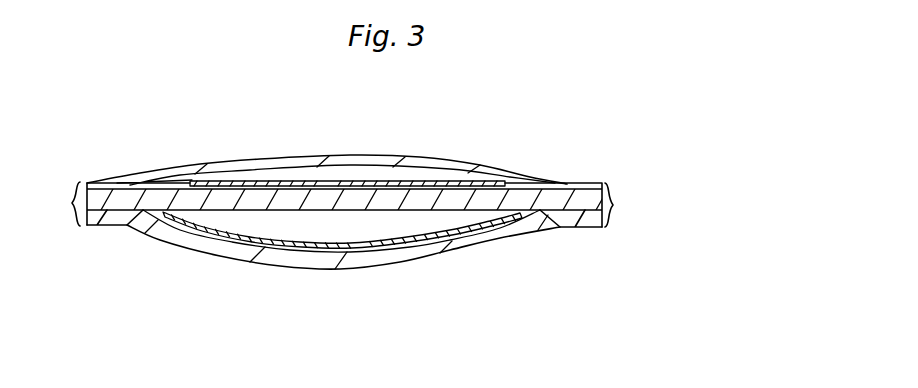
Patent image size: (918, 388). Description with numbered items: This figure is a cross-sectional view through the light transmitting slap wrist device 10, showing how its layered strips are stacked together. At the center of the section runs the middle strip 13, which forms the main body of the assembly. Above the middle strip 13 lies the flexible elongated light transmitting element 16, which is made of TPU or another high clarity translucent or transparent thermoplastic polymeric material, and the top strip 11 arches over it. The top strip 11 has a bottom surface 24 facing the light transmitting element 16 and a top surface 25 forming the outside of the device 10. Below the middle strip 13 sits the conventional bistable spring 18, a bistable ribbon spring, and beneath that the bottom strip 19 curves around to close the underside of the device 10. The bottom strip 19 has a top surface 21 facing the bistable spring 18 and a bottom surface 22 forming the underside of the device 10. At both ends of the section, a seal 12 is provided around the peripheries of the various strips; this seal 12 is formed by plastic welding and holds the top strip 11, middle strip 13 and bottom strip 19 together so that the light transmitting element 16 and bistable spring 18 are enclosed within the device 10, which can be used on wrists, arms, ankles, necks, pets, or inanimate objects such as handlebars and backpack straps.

The light transmitting slap wrist device 10 is at (572, 128).
The top strip 11 is at (432, 165).
The seal 12 is at (72, 202).
The middle strip 13 is at (534, 200).
The flexible elongated light transmitting element 16 is at (331, 181).
The bistable spring 18 is at (363, 249).
The bottom strip 19 is at (302, 263).
The top surface 21 is at (140, 222).
The bottom surface 22 is at (172, 241).
The bottom surface 24 is at (158, 181).
The top surface 25 is at (218, 163).